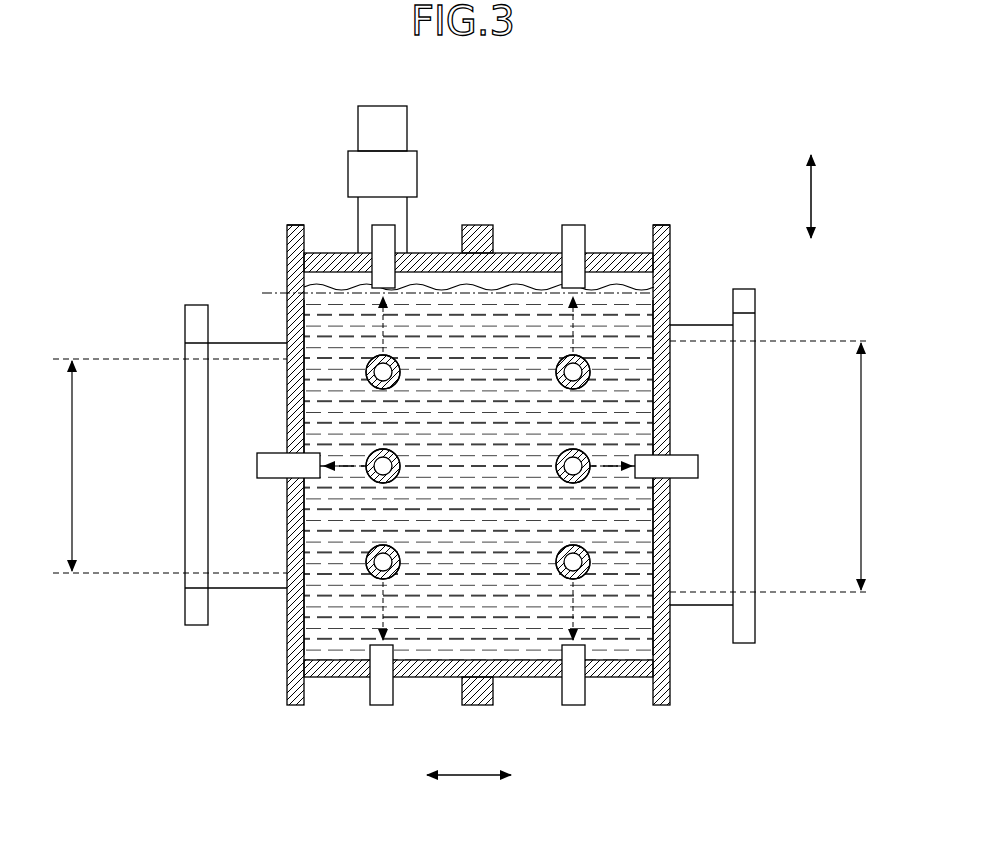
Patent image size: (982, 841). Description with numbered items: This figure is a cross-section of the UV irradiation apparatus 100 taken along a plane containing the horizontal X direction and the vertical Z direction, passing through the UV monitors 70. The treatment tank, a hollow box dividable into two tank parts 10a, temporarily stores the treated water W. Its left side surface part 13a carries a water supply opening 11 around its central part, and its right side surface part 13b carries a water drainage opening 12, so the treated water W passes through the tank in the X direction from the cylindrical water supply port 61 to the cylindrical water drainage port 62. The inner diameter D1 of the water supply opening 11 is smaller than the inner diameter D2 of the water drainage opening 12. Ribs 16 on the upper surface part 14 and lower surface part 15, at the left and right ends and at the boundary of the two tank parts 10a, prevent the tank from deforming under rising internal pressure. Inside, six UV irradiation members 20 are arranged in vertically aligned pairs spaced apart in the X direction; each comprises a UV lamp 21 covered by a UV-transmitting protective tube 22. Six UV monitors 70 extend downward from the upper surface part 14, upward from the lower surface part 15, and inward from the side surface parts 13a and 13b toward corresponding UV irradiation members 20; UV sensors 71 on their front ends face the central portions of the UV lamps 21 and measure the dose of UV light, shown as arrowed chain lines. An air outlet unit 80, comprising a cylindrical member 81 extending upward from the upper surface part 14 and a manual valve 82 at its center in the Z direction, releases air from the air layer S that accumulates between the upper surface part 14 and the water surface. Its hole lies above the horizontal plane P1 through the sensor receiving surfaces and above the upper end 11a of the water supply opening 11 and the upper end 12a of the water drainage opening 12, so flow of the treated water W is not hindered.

The UV irradiation apparatus 100 is at (210, 146).
The tank part 10a is at (309, 248).
The water supply opening 11 is at (215, 465).
The upper end of the water supply opening 11a is at (285, 360).
The water drainage opening 12 is at (689, 465).
The upper end of the water drainage opening 12a is at (673, 352).
The side surface part 13a is at (292, 392).
The side surface part 13b is at (667, 355).
The upper surface part 14 is at (416, 253).
The lower surface part 15 is at (332, 678).
The rib 16 is at (287, 227).
The UV irradiation member 20 is at (470, 507).
The UV lamp 21 is at (367, 380).
The protective tube 22 is at (372, 388).
The water supply port 61 is at (234, 342).
The water drainage port 62 is at (755, 313).
The UV monitor 70 is at (375, 232).
The UV sensor 71 is at (372, 290).
The air outlet unit 80 is at (435, 173).
The cylindrical member 81 is at (400, 130).
The valve 82 is at (414, 195).
The treated water W is at (438, 282).
The horizontal plane P1 is at (268, 291).
The air layer S is at (640, 280).
The inner diameter of the water supply opening D1 is at (161, 466).
The inner diameter of the water drainage opening D2 is at (782, 466).
The Z direction Z is at (822, 196).
The X direction X is at (469, 794).